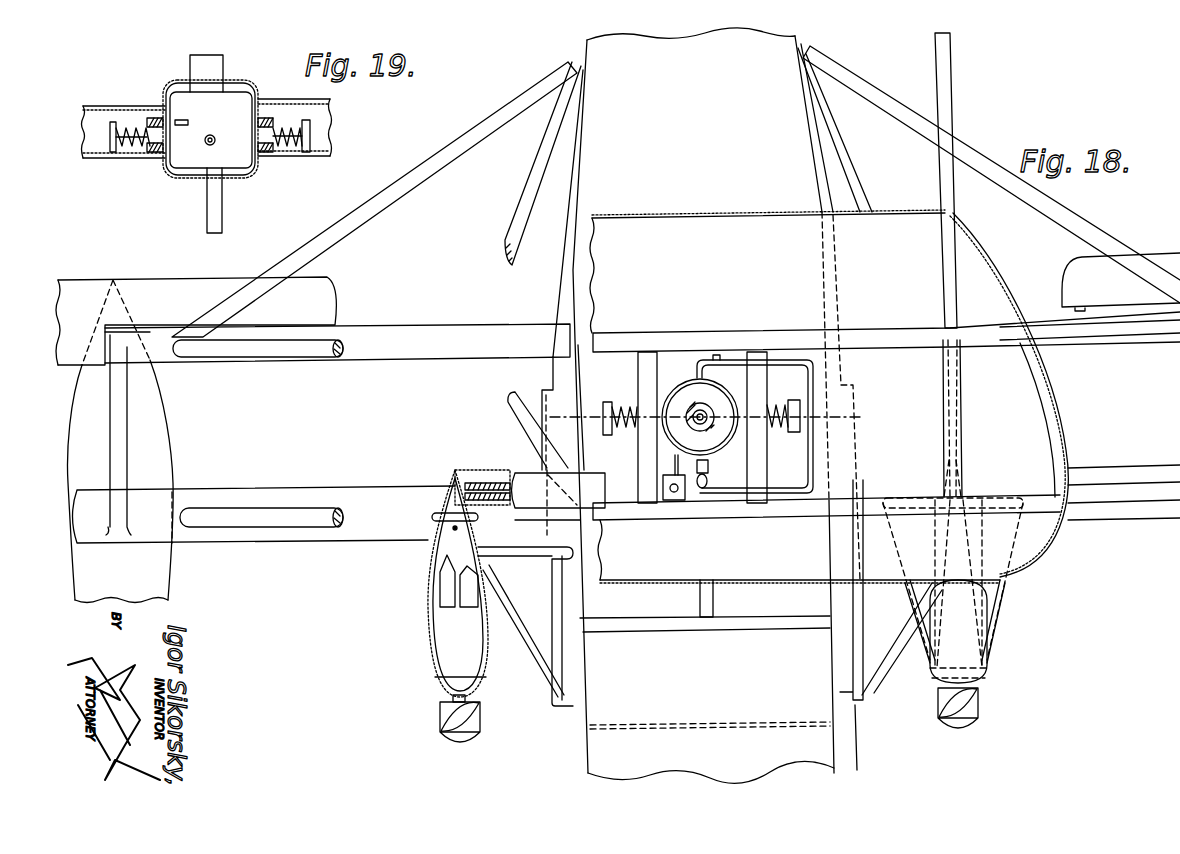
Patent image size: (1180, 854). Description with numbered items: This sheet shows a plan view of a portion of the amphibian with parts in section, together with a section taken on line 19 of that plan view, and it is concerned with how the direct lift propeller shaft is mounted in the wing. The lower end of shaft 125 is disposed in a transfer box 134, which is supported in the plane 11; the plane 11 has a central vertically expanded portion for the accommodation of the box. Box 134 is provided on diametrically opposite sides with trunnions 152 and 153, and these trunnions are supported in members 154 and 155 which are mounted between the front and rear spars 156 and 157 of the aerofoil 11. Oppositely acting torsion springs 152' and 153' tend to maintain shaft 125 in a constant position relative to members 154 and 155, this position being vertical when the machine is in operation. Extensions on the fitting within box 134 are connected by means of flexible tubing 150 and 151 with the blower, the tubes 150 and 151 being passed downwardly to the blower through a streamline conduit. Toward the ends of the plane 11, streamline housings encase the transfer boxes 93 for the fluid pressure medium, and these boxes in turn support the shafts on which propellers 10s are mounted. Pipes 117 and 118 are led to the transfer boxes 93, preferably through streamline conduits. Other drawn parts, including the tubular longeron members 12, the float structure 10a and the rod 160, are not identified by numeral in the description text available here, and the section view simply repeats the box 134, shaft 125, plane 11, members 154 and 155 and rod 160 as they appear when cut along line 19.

In FIG. 19, the plane 11 is at (268, 99).
In FIG. 18, the plane 11 is at (672, 214).
In FIG. 18, the longeron tube 12 is at (418, 345).
In FIG. 18, the section line 19 is at (862, 414).
In FIG. 18, the transfer boxes 93 is at (443, 622).
In FIG. 18, the float strut 10a is at (432, 556).
In FIG. 18, the propellers 10s is at (482, 717).
In FIG. 18, the pipe 117 is at (493, 483).
In FIG. 18, the pipe 118 is at (467, 470).
In FIG. 19, the shaft 125 is at (220, 72).
In FIG. 19, the transfer box 134 is at (240, 150).
In FIG. 18, the transfer box 134 is at (678, 390).
In FIG. 18, the flexible tubing 150 is at (710, 465).
In FIG. 18, the flexible tubing 151 is at (787, 360).
In FIG. 18, the trunnion 152 is at (844, 423).
In FIG. 18, the torsion spring 152' is at (788, 435).
In FIG. 18, the trunnion 153 is at (620, 402).
In FIG. 18, the torsion spring 153' is at (621, 434).
In FIG. 19, the member 154 is at (152, 162).
In FIG. 18, the member 154 is at (640, 370).
In FIG. 19, the member 155 is at (275, 156).
In FIG. 18, the member 155 is at (757, 355).
In FIG. 18, the front spar 156 is at (722, 507).
In FIG. 18, the rear spar 157 is at (713, 342).
In FIG. 19, the rod 160 is at (207, 198).